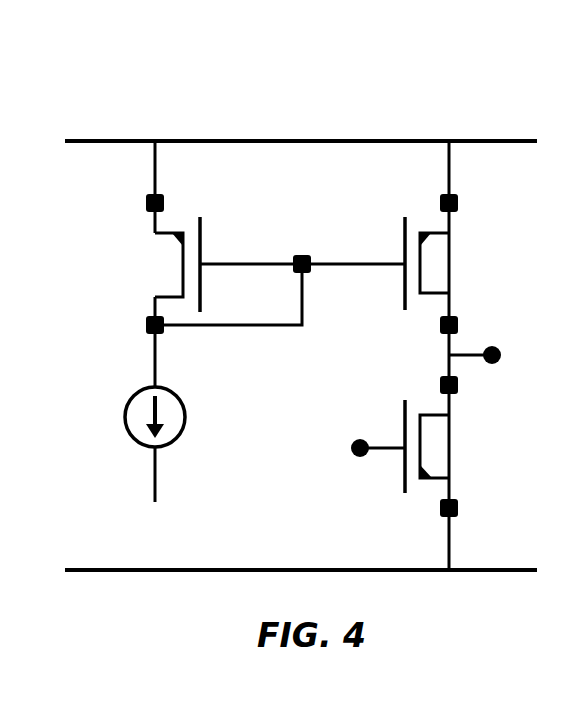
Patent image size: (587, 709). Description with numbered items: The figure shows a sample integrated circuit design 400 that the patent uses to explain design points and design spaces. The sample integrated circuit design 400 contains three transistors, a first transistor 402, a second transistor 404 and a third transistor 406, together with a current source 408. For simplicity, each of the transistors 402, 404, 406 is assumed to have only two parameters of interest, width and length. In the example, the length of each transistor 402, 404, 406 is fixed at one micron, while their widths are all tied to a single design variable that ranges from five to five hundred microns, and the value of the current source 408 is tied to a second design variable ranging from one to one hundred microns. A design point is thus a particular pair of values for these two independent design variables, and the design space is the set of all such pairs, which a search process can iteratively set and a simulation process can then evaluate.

The sample integrated circuit design 400 is at (160, 78).
The transistor M1 402 is at (474, 449).
The transistor M2 404 is at (474, 266).
The transistor M3 406 is at (130, 266).
The current source Ib 408 is at (92, 416).